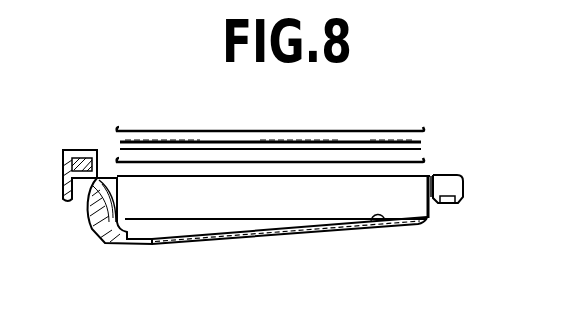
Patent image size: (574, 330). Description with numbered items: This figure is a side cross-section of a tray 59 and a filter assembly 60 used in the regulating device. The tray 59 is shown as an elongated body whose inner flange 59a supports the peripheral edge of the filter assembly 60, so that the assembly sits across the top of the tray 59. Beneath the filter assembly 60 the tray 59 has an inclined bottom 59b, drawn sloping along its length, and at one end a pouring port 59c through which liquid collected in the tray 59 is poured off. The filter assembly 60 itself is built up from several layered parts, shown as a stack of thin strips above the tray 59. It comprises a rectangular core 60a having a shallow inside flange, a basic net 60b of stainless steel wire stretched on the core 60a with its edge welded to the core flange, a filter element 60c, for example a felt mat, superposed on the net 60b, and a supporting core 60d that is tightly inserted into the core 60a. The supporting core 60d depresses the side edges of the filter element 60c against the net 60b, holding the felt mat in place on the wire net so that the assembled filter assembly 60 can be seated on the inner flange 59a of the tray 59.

The tray 59 is at (298, 230).
The inner flange 59a is at (226, 220).
The inclined bottom 59b is at (378, 224).
The pouring port 59c is at (140, 243).
The filter assembly 60 is at (434, 122).
The rectangular core 60a is at (207, 165).
The basic net 60b is at (327, 150).
The filter element 60c is at (144, 134).
The supporting core 60d is at (200, 130).